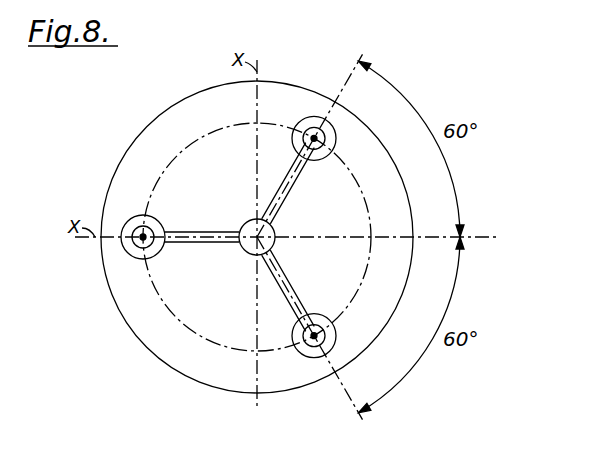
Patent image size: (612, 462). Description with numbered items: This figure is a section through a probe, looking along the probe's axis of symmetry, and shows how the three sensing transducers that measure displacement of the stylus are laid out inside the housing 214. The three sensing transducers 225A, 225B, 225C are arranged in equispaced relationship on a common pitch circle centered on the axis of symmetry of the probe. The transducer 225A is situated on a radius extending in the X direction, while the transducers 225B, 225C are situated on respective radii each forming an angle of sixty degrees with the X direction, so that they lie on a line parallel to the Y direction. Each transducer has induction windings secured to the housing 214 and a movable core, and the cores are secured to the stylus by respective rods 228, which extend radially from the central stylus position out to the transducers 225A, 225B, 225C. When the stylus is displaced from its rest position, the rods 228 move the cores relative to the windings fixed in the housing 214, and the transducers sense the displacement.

The housing 214 is at (127, 327).
The rods 228 is at (212, 245).
The sensing transducer 225A is at (126, 251).
The sensing transducer 225B is at (304, 118).
The sensing transducer 225C is at (312, 358).